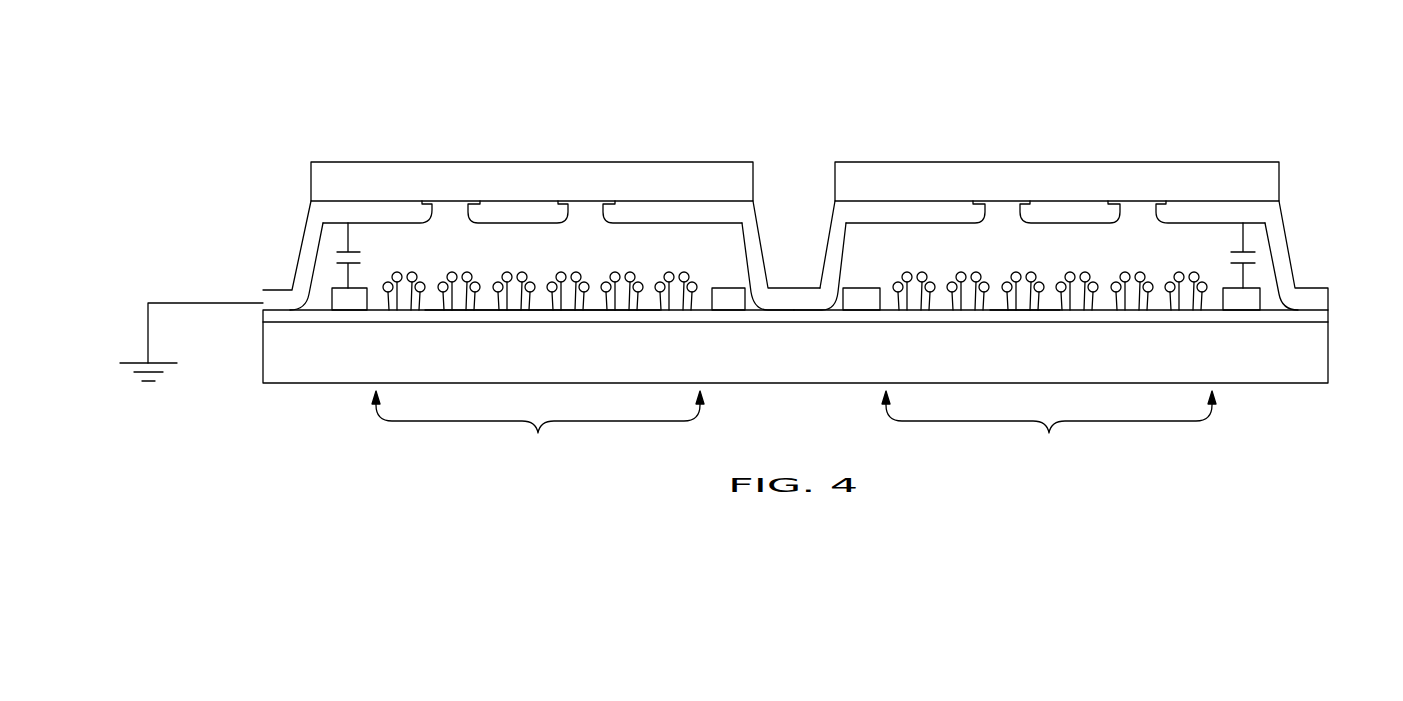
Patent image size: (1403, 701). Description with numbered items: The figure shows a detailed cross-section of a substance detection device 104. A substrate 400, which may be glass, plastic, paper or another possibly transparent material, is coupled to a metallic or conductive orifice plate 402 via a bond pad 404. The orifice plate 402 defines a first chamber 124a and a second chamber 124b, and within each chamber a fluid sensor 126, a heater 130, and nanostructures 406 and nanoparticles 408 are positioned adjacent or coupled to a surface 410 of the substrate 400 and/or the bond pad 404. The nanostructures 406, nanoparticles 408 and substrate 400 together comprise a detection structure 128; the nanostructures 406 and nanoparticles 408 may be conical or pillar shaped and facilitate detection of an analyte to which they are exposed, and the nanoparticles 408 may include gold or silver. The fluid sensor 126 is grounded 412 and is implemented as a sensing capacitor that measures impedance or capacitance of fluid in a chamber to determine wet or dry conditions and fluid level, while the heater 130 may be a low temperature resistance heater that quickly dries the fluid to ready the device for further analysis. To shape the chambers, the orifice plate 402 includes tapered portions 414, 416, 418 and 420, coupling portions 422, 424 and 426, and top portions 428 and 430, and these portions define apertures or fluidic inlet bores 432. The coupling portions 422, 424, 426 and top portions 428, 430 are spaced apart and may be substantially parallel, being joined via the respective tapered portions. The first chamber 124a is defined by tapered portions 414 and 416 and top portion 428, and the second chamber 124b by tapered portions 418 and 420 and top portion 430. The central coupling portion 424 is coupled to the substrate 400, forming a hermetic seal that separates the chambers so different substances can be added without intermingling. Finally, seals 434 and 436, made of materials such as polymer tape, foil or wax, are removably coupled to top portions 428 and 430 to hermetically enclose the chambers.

The substance detection device 104 is at (315, 105).
The substrate 400 is at (273, 382).
The orifice plate 402 is at (793, 254).
The bond pad 404 is at (541, 315).
The nanostructures 406 is at (413, 303).
The nanoparticles 408 is at (640, 292).
The surface 410 is at (1052, 312).
The ground 412 is at (182, 303).
The tapered portion 414 is at (304, 258).
The tapered portion 416 is at (752, 257).
The tapered portion 418 is at (841, 256).
The tapered portion 420 is at (1287, 263).
The coupling portion 422 is at (268, 289).
The coupling portion 424 is at (793, 303).
The coupling portion 426 is at (1320, 292).
The top portion 428 is at (700, 210).
The top portion 430 is at (1215, 209).
The fluidic inlet bores 432 is at (449, 207).
The seal 434 is at (722, 162).
The seal 436 is at (888, 162).
The fluid sensor 126 is at (344, 304).
The heater 130 is at (727, 305).
The detection structure 128 is at (794, 426).
The first chamber 124a is at (795, 298).
The second chamber 124b is at (1098, 260).